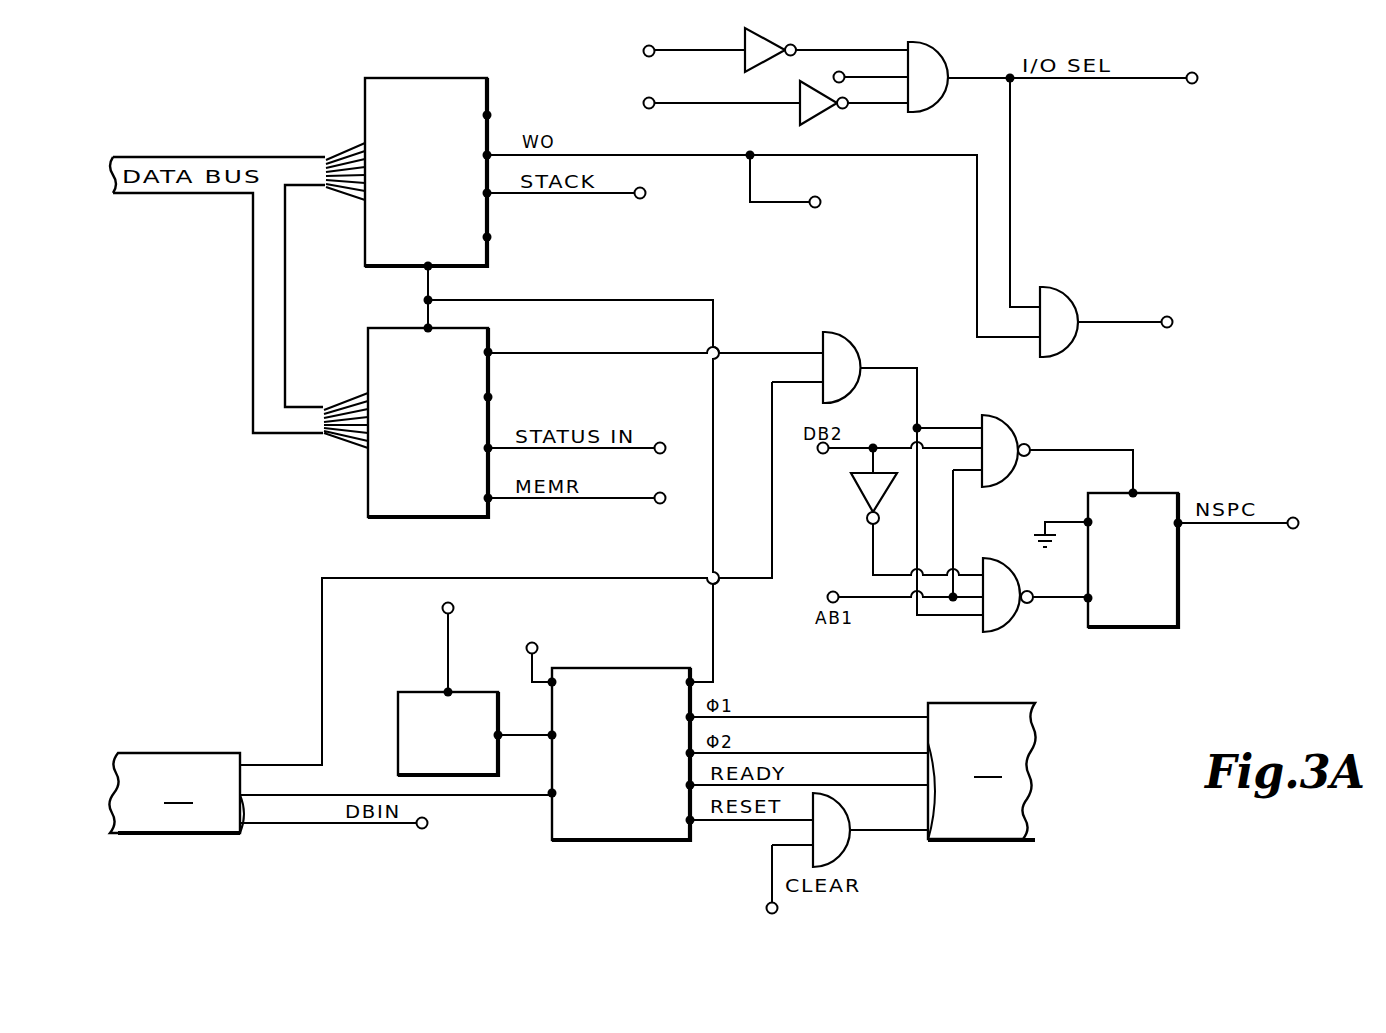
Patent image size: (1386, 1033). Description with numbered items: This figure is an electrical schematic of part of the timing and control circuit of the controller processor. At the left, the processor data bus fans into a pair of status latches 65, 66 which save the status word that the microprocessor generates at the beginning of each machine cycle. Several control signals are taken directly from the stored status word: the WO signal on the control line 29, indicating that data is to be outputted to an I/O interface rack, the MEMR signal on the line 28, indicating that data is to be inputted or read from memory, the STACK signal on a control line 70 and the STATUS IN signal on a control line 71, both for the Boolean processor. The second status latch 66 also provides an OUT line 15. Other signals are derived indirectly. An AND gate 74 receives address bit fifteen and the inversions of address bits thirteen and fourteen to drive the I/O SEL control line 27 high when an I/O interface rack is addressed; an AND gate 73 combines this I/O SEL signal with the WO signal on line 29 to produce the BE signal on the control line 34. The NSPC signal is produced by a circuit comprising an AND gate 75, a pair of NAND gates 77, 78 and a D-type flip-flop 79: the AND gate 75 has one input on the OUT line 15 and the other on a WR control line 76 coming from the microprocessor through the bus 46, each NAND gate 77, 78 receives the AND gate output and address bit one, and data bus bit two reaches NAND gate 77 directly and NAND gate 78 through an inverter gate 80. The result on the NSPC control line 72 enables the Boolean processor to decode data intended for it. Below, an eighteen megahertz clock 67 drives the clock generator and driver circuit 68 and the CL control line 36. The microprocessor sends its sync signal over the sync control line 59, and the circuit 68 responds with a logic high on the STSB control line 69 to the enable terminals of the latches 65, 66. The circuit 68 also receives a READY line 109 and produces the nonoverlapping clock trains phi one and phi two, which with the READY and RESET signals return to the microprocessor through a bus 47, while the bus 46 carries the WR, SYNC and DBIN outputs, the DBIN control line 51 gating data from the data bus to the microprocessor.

The status latch 65 is at (474, 78).
The status latch 66 is at (368, 335).
The STSB control line 69 is at (671, 298).
The STACK control line 70 is at (645, 197).
The WO control line 29 is at (821, 204).
The AND gate 74 is at (945, 61).
The I/O SEL control line 27 is at (1196, 77).
The AND gate 73 is at (1067, 300).
The BE control line 34 is at (1172, 327).
The AND gate 75 is at (866, 342).
The OUT line 15 is at (612, 350).
The STATUS IN control line 71 is at (664, 442).
The MEMR control line 28 is at (665, 497).
The NAND gate 77 is at (1018, 438).
The NAND gate 78 is at (1000, 560).
The D-type flip-flop 79 is at (1150, 570).
The NSPC control line 72 is at (1301, 522).
The inverter gate 80 is at (867, 506).
The WR control line 76 is at (322, 618).
The CL control line 36 is at (454, 606).
The 18 megahertz clock 67 is at (412, 692).
The READY line 109 is at (537, 644).
The clock generator and driver circuit 68 is at (645, 842).
The bus 46 is at (176, 793).
The bus 47 is at (982, 771).
The DBIN control line 51 is at (422, 829).
The sync control line 59 is at (500, 797).